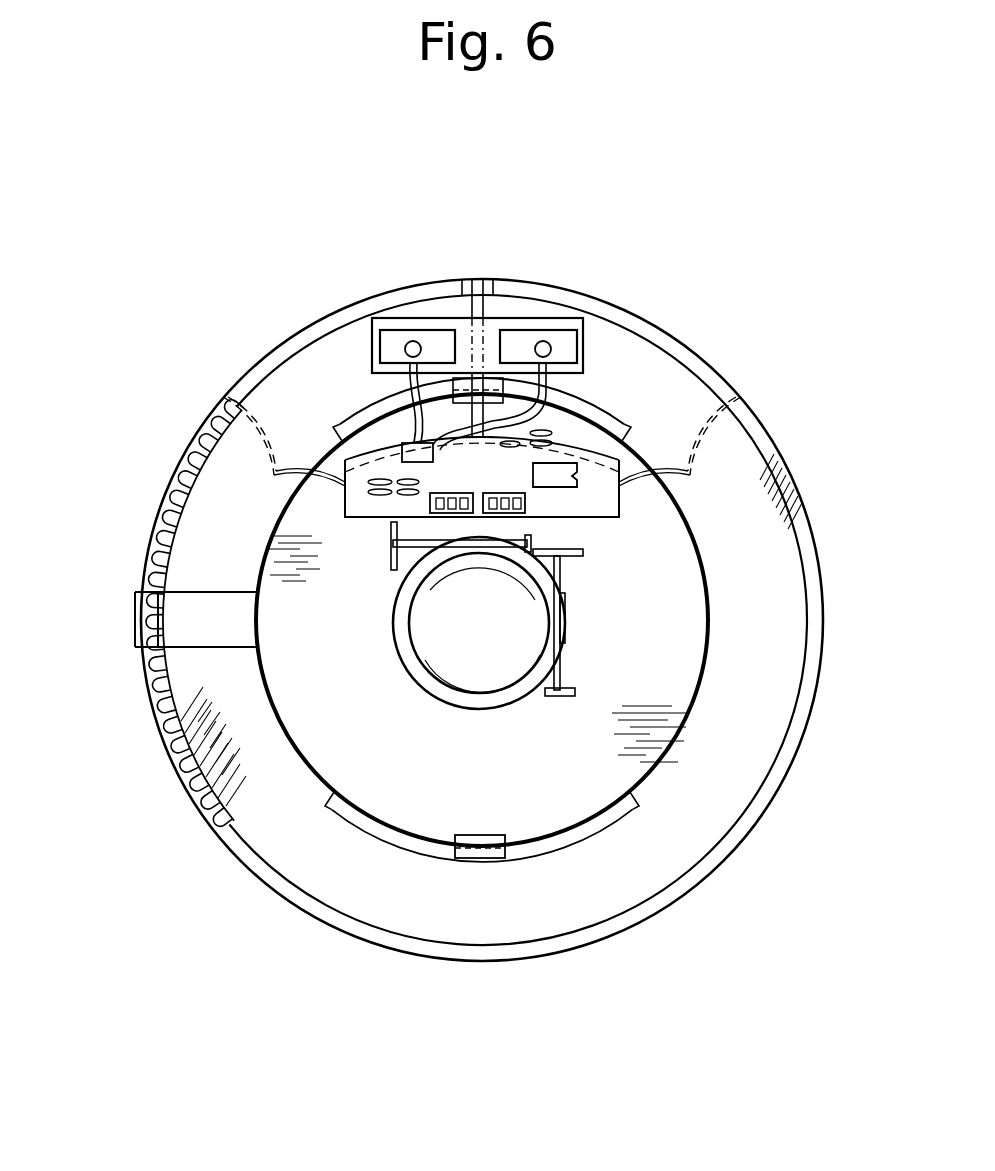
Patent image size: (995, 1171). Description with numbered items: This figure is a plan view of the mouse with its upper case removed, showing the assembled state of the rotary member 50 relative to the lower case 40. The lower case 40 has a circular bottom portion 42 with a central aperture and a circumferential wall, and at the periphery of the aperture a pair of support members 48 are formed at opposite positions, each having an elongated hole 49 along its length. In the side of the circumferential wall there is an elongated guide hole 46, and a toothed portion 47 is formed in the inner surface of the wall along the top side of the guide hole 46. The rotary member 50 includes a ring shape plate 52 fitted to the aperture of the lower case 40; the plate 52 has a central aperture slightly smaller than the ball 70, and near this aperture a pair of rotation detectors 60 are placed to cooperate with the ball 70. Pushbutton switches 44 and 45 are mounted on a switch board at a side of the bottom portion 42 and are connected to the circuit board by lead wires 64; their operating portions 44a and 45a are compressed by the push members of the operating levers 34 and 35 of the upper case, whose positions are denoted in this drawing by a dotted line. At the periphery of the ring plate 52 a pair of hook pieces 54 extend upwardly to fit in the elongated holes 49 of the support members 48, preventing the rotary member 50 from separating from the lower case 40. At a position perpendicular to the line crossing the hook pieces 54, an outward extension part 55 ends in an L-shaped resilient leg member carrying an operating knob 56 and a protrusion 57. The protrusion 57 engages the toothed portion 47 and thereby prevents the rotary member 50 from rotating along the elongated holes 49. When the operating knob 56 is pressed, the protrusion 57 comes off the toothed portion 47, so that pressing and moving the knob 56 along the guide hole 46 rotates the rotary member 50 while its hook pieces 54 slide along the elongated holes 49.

The operating lever 34 is at (690, 458).
The operating lever 35 is at (257, 420).
The lower case 40 is at (252, 342).
The bottom portion 42 is at (677, 742).
The pushbutton switch 44 is at (570, 348).
The operating portion 44a is at (546, 340).
The pushbutton switch 45 is at (390, 348).
The operating portion 45a is at (410, 340).
The elongated guide hole 46 is at (217, 817).
The toothed portion 47 is at (165, 742).
The support member 48 is at (590, 828).
The elongated hole 49 is at (348, 818).
The rotary member 50 is at (714, 612).
The ring shape plate 52 is at (680, 677).
The hook piece 54 is at (478, 832).
The outward extension part 55 is at (184, 600).
The operating knob 56 is at (136, 604).
The protrusion 57 is at (150, 620).
The rotation detector 60 is at (634, 546).
The lead wires 64 is at (605, 392).
The ball 70 is at (462, 668).